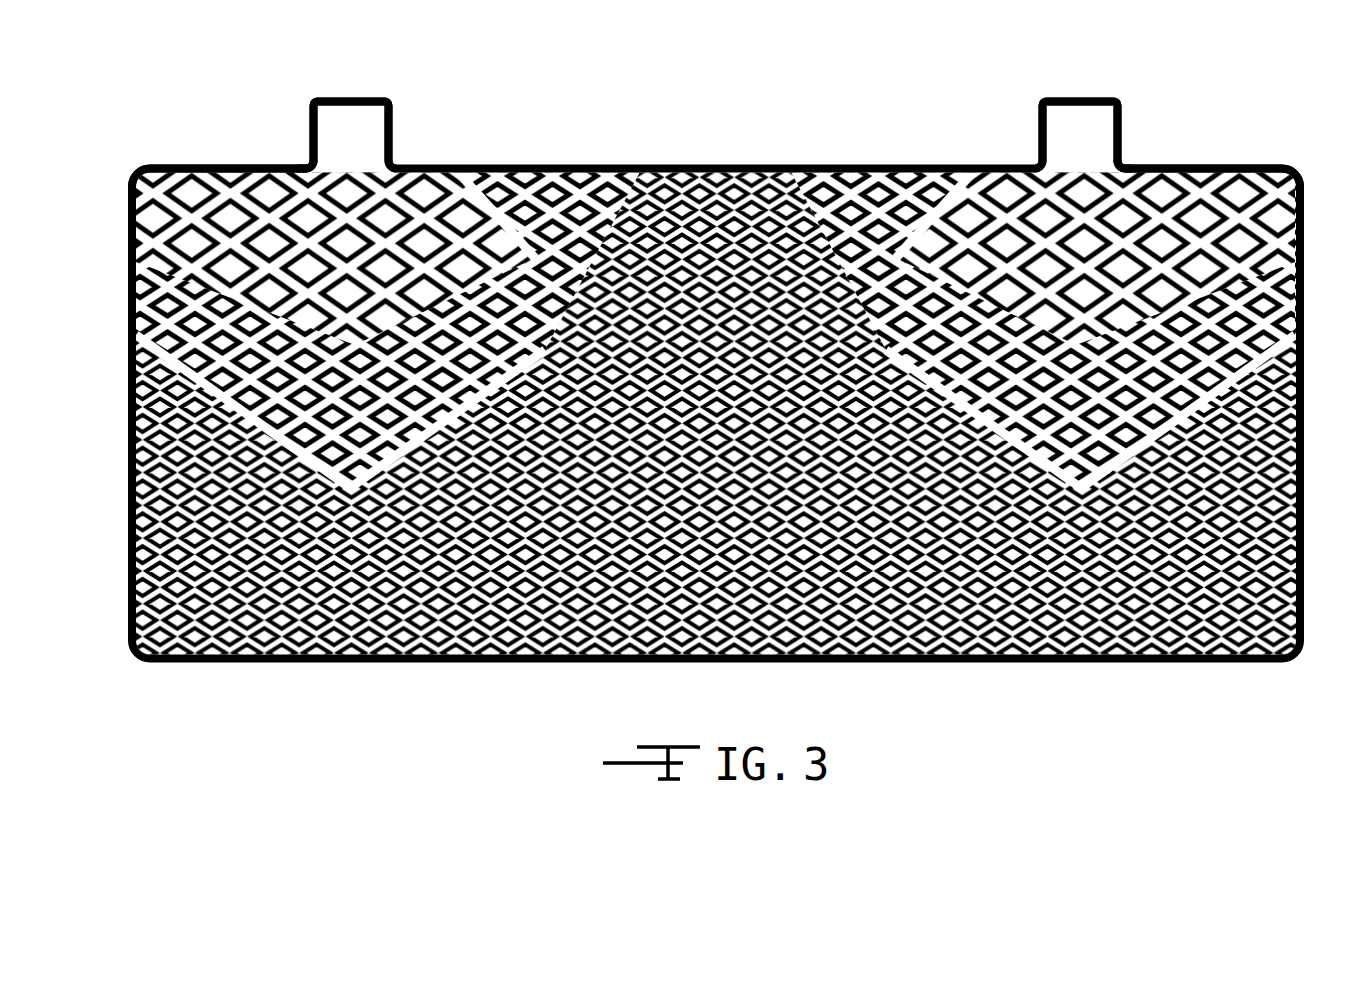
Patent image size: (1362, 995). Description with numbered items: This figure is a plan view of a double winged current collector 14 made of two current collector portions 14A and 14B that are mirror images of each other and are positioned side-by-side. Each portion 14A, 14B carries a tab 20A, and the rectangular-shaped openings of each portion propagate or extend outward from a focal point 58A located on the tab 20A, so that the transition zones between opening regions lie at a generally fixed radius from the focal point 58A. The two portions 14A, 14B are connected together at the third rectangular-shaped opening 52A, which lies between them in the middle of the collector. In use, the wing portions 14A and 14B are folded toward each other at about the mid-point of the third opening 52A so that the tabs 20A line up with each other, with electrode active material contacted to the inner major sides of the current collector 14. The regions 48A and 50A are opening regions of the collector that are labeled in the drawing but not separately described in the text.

The double winged current collector 14 is at (1320, 214).
The current collector portion 14A is at (1247, 156).
The current collector portion 14B is at (212, 154).
The tab 20A is at (353, 110).
The first mesh region with larger openings 48A is at (491, 204).
The boundary between mesh regions 50A is at (549, 197).
The third rectangular-shaped opening 52A is at (649, 174).
The focal point 58A is at (347, 164).